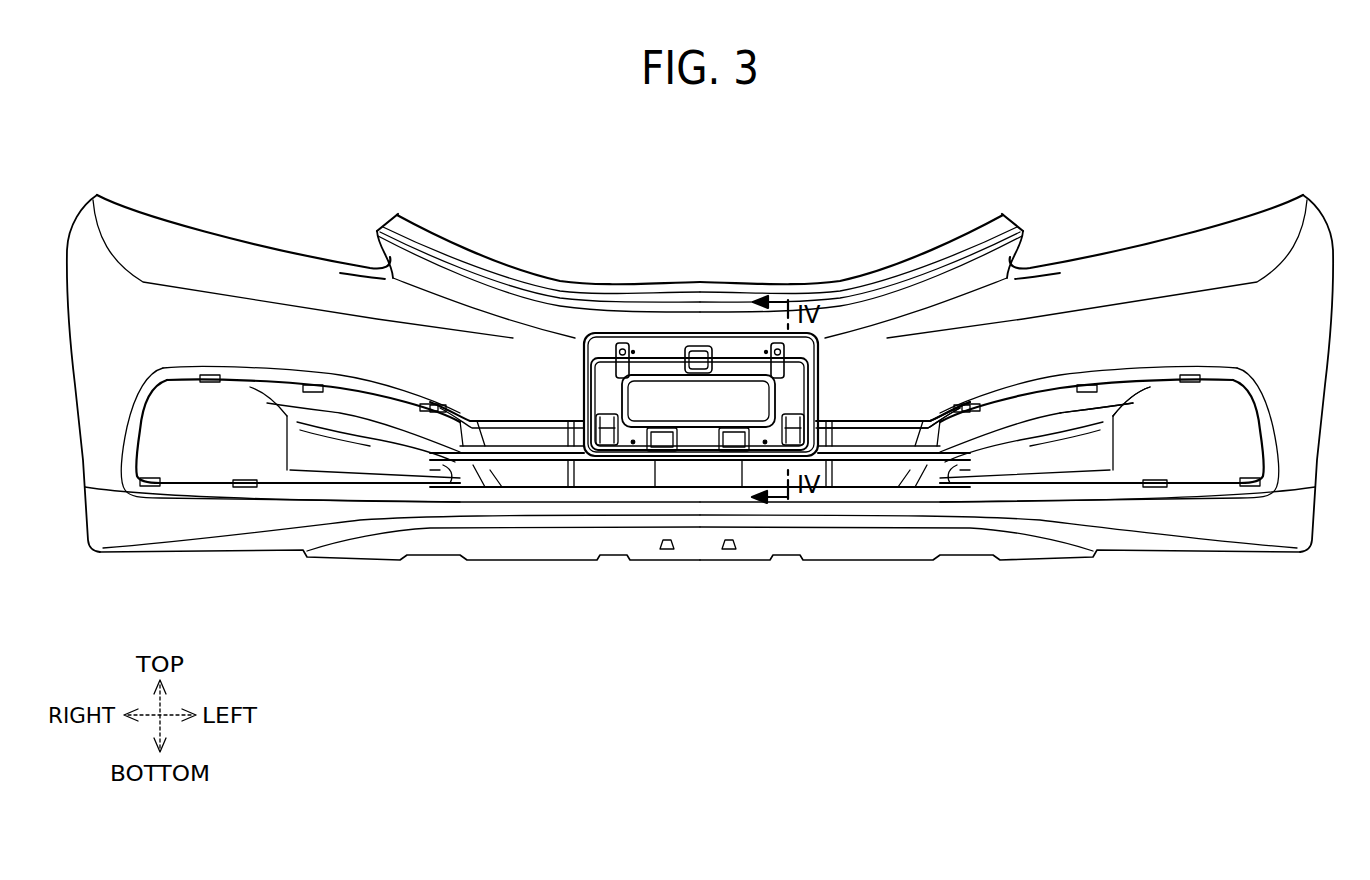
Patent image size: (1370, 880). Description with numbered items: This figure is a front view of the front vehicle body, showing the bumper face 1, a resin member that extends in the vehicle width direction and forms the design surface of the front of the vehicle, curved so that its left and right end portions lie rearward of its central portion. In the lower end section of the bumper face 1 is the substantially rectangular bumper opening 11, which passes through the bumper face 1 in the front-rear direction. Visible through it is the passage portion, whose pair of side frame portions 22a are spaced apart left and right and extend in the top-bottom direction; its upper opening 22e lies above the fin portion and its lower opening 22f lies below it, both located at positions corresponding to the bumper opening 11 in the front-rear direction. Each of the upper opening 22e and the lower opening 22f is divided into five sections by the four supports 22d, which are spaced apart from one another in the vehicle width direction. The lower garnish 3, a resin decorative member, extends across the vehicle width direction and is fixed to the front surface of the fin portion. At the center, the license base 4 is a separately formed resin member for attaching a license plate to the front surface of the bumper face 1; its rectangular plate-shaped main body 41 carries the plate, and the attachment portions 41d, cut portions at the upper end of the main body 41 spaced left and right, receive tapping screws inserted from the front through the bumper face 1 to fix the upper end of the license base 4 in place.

The bumper face 1 is at (1149, 248).
The lower garnish 3 is at (523, 458).
The license base 4 is at (706, 470).
The bumper opening 11 is at (1192, 470).
The side frame portions 22a is at (490, 470).
The supports 22d is at (580, 478).
The upper opening 22e is at (848, 444).
The lower opening 22f is at (867, 472).
The main body 41 is at (636, 452).
The attachment portions 41d is at (622, 349).